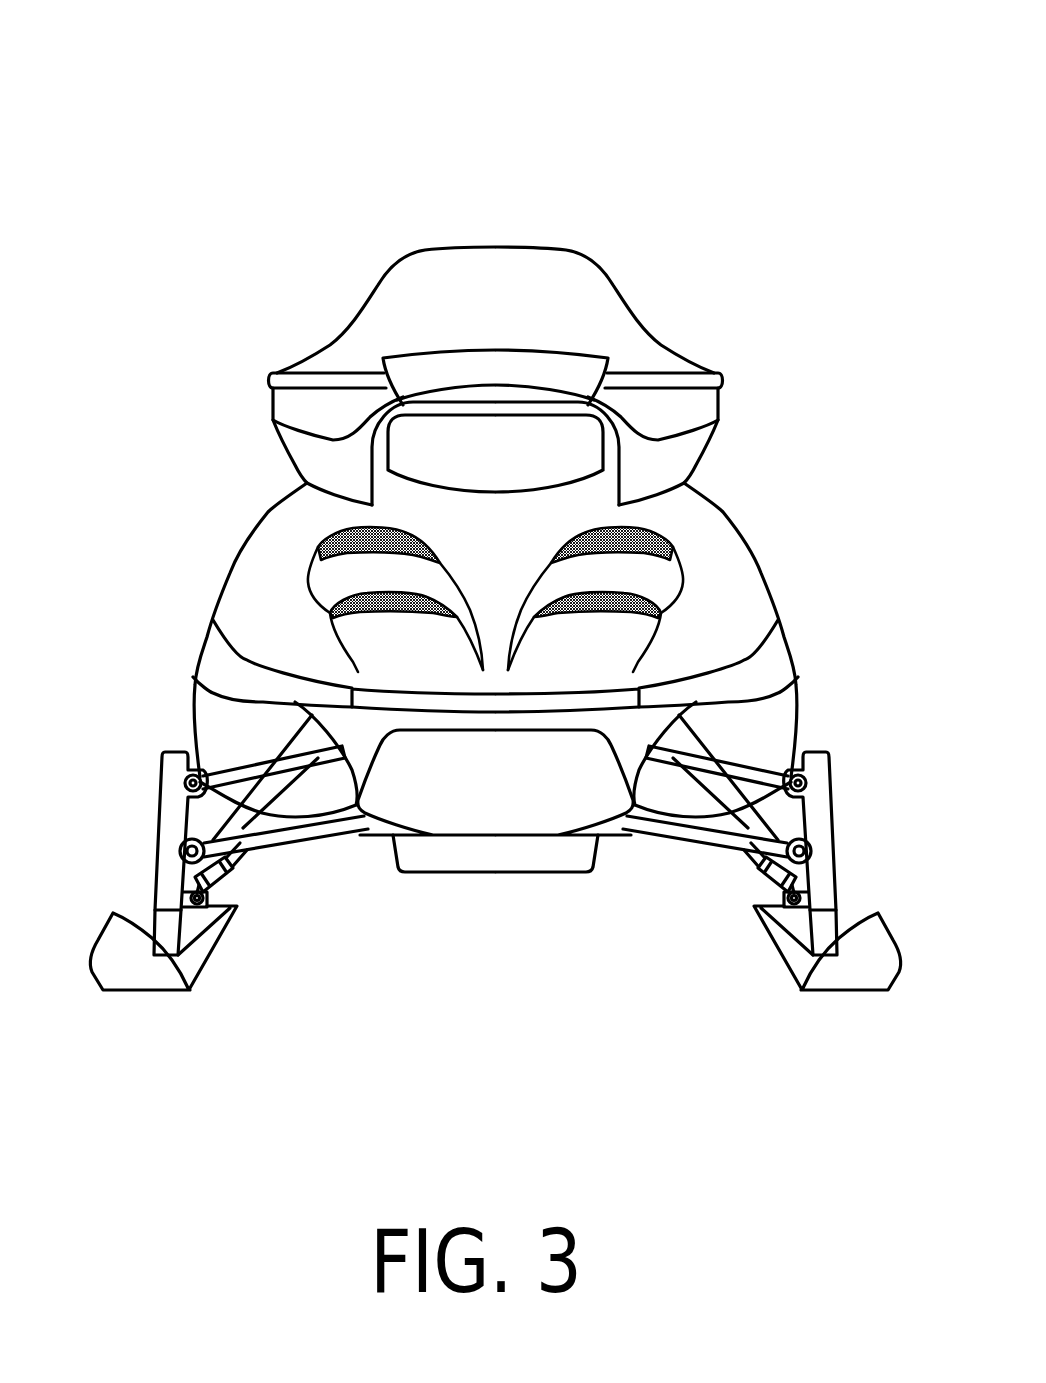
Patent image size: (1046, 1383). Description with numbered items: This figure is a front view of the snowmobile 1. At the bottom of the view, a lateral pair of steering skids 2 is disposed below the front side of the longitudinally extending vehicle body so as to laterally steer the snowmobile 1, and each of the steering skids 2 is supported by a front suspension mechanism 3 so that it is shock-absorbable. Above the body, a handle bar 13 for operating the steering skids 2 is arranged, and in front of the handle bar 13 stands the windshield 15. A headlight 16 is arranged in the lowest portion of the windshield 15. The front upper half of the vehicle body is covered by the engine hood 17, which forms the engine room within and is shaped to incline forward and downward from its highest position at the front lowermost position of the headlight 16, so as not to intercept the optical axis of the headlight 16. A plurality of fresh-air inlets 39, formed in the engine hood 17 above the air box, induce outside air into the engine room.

The snowmobile 1 is at (528, 98).
The steering skids 2 is at (108, 948).
The front suspension mechanisms 3 is at (275, 795).
The handle bar 13 is at (657, 382).
The windshield 15 is at (385, 305).
The headlight 16 is at (413, 461).
The engine hood 17 is at (696, 513).
The fresh-air inlets 39 is at (327, 609).